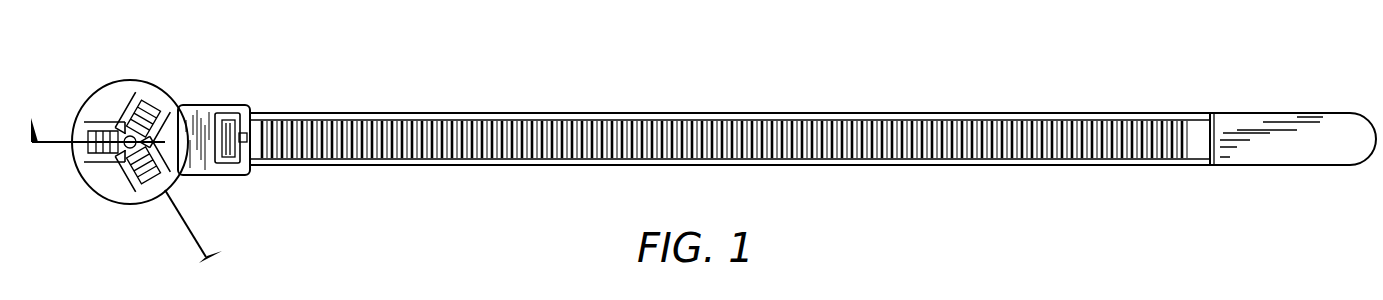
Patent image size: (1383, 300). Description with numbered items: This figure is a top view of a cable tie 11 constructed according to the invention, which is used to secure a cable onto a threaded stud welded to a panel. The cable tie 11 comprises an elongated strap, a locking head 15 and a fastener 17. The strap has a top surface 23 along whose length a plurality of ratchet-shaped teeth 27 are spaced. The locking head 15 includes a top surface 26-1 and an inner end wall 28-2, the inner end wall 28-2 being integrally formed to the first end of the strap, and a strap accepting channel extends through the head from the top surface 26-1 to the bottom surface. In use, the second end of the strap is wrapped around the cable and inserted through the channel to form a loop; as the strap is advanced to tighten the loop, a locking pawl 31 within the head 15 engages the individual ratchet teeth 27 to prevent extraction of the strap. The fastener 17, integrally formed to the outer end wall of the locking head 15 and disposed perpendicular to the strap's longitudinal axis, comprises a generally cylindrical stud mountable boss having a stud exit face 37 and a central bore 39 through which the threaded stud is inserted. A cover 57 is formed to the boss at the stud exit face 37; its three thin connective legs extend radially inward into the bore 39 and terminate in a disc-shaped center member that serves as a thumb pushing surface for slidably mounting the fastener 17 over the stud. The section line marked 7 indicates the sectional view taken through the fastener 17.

The cable tie 11 is at (450, 186).
The locking head 15 is at (250, 187).
The fastener 17 is at (111, 210).
The top surface 23 is at (692, 126).
The top surface 26-1 is at (213, 104).
The ratchet-shaped teeth 27 is at (528, 130).
The inner end wall 28-2 is at (250, 112).
The locking pawl 31 is at (238, 152).
The stud exit face 37 is at (135, 102).
The central bore 39 is at (116, 128).
The cover 57 is at (106, 159).
The section line 7- 7 is at (136, 173).